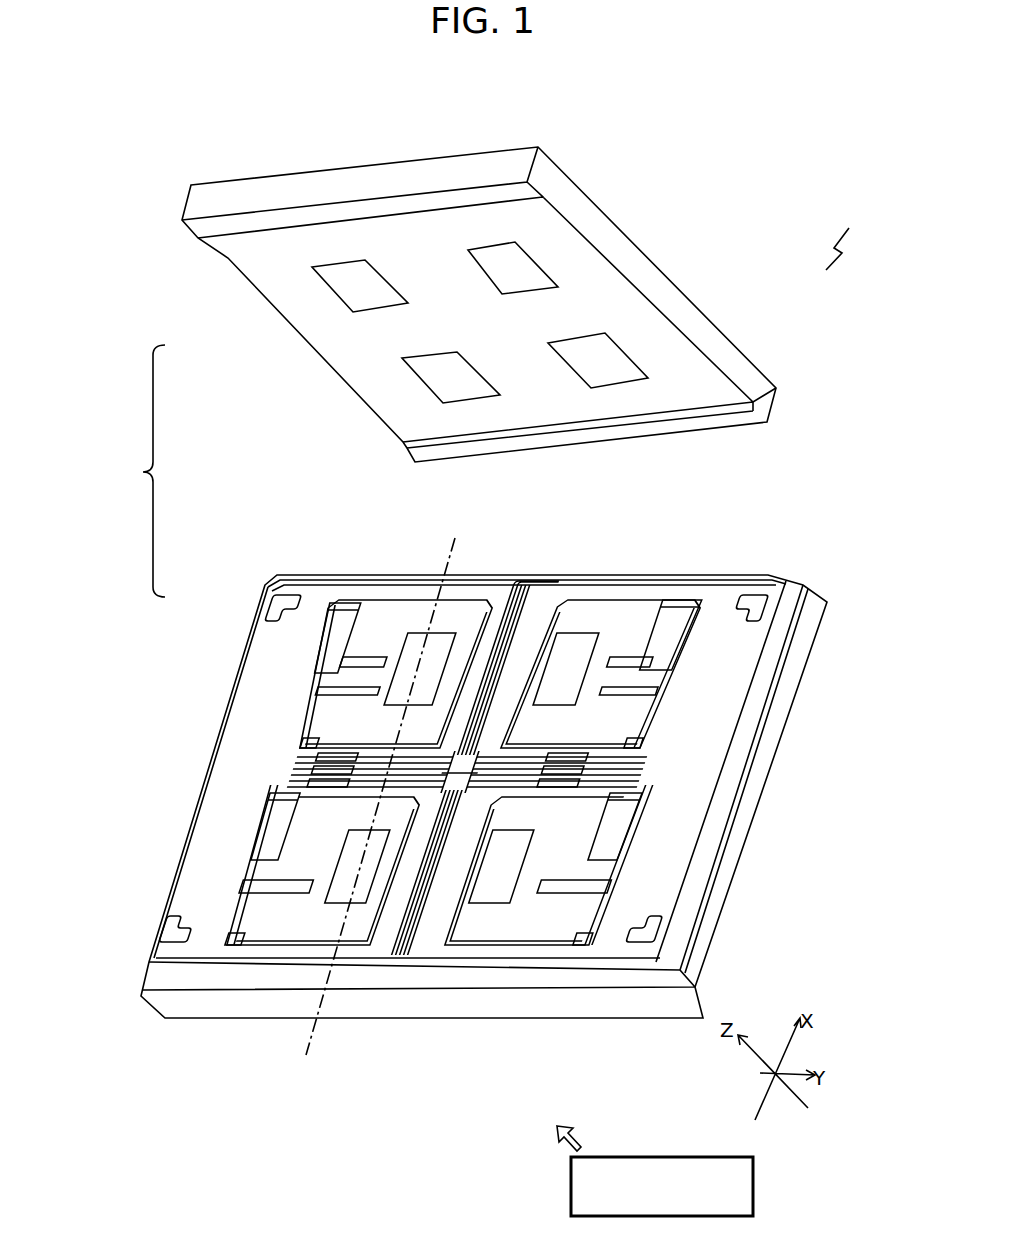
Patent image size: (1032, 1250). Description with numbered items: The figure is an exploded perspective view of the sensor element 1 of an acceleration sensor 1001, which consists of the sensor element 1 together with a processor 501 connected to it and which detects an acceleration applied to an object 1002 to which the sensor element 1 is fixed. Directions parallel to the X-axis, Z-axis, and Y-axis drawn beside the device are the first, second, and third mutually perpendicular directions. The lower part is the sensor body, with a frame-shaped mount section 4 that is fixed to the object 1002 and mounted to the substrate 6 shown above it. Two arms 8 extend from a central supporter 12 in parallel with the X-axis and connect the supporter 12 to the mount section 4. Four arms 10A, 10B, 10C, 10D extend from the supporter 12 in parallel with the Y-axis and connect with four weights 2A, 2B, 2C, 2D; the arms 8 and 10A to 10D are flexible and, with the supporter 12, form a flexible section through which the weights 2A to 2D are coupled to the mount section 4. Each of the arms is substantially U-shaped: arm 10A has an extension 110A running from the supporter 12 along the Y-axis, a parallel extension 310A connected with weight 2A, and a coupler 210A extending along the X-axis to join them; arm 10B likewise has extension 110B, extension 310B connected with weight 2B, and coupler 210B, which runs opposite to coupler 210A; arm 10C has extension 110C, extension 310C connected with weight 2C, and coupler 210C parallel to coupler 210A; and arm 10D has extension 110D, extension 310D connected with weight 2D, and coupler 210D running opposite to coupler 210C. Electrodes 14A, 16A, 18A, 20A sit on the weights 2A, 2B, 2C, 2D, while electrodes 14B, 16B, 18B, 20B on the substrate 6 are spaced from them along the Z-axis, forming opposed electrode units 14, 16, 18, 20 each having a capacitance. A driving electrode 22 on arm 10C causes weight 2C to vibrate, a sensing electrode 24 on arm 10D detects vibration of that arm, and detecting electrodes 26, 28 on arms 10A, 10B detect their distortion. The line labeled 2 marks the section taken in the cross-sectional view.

The acceleration sensor 1001 is at (851, 234).
The sensor element 1 is at (144, 471).
The substrate 6 is at (697, 362).
The opposed electrode unit 14 is at (290, 684).
The electrode 14A is at (363, 907).
The electrode 14B is at (337, 280).
The opposed electrode unit 16 is at (364, 528).
The electrode 16A is at (417, 645).
The electrode 16B is at (427, 377).
The opposed electrode unit 18 is at (576, 638).
The electrode 18A is at (498, 895).
The electrode 18B is at (517, 258).
The opposed electrode unit 20 is at (645, 489).
The electrode 20A is at (557, 648).
The electrode 20B is at (610, 357).
The cross-section line 2 is at (387, 796).
The weight 2A is at (313, 932).
The weight 2B is at (378, 610).
The weight 2C is at (457, 933).
The weight 2D is at (577, 615).
The mount section 4 is at (265, 955).
The arm 8 is at (400, 905).
The arm 10A is at (260, 940).
The arm 10B is at (353, 623).
The arm 10C is at (567, 873).
The arm 10D is at (622, 675).
The supporter 12 is at (438, 950).
The driving electrode 22 is at (560, 793).
The sensing electrode 24 is at (555, 778).
The detecting electrode 26 is at (375, 775).
The detecting electrode 28 is at (385, 760).
The extension 110A is at (330, 785).
The extension 110B is at (328, 757).
The extension 110C is at (615, 835).
The extension 110D is at (600, 757).
The coupler 210A is at (270, 826).
The coupler 210B is at (308, 713).
The coupler 210C is at (573, 865).
The coupler 210D is at (657, 720).
The extension 310A is at (288, 870).
The extension 310B is at (343, 677).
The extension 310C is at (563, 872).
The extension 310D is at (637, 675).
The processor 501 is at (650, 1153).
The object 1002 is at (402, 1010).